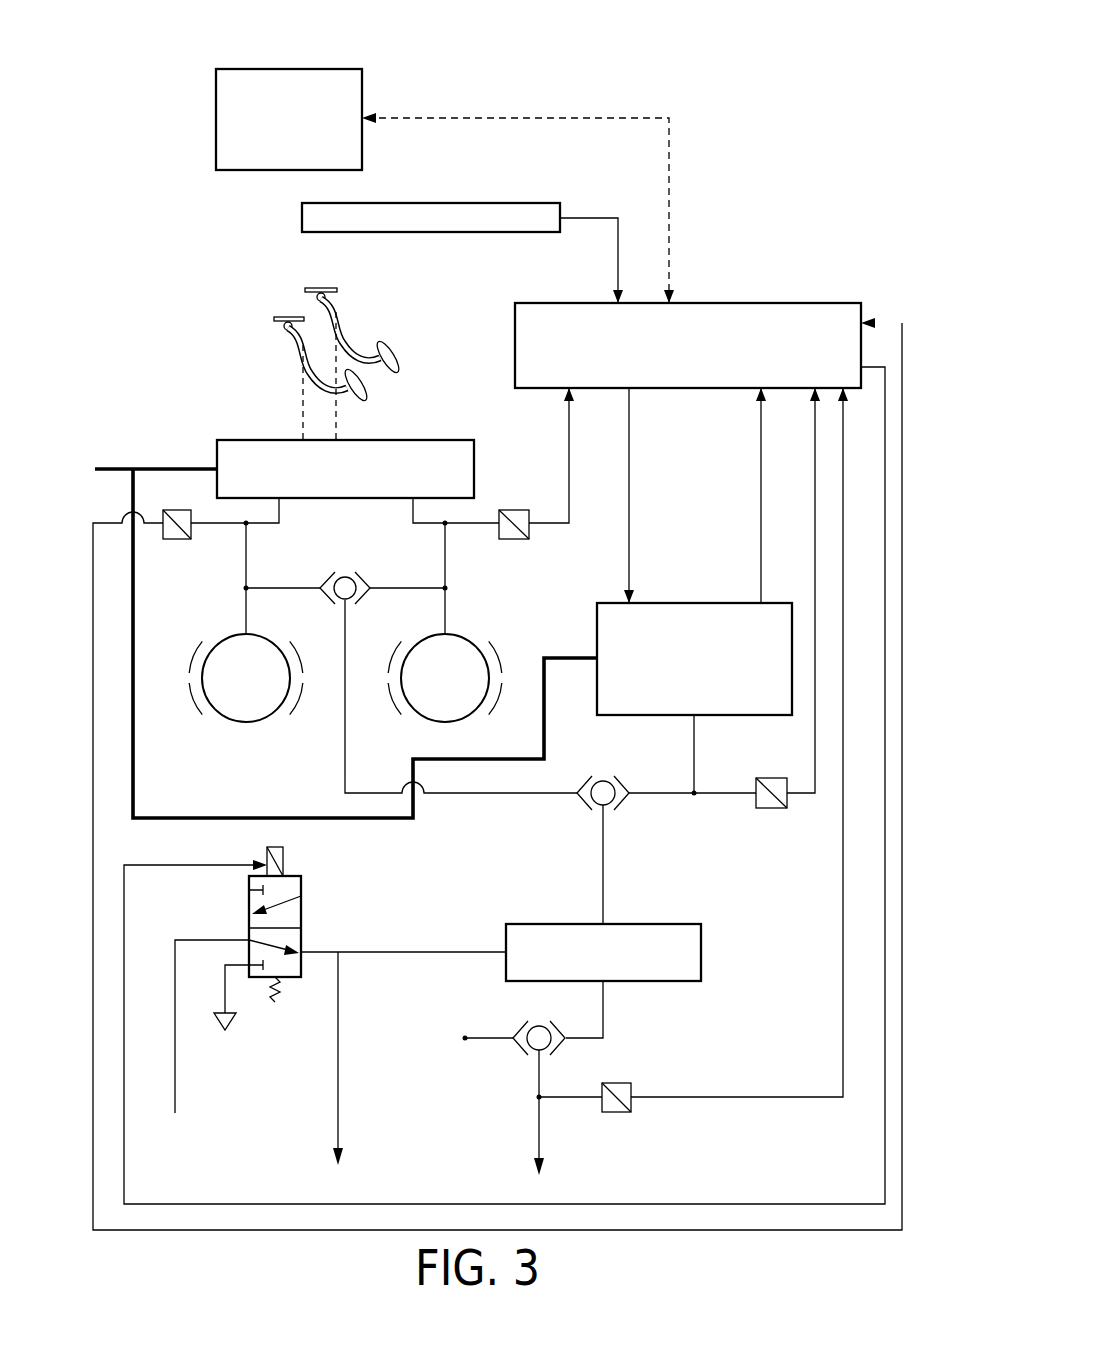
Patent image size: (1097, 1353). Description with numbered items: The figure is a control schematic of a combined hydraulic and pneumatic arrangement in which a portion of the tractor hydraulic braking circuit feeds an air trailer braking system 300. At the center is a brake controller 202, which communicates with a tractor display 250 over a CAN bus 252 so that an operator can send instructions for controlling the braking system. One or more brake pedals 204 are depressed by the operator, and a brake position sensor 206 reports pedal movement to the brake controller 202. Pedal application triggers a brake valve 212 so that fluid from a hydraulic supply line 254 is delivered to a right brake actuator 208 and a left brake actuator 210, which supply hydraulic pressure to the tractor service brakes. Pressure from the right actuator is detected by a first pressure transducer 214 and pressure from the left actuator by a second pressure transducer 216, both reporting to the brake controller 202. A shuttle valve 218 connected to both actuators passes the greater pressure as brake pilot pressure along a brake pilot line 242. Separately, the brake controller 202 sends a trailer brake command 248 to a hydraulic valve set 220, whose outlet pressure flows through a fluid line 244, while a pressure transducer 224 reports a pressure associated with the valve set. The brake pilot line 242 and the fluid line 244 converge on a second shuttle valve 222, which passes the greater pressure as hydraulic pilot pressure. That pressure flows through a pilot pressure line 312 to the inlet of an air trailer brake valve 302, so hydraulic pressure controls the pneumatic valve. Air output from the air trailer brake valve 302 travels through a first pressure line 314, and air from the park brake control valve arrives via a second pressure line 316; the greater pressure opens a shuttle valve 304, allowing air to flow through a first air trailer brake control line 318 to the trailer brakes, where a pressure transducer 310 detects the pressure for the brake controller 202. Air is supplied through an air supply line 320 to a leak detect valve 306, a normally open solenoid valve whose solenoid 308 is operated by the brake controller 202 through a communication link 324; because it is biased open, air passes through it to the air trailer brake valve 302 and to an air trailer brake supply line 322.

The tractor display 250 is at (236, 69).
The CAN bus 252 is at (417, 117).
The brake position sensor 206 is at (508, 203).
The brake controller 202 is at (750, 303).
The air trailer braking system 300 is at (798, 106).
The brake pedals 204 is at (300, 292).
The brake valve 212 is at (416, 440).
The hydraulic supply line 254 is at (113, 469).
The second pressure transducer 216 is at (513, 510).
The trailer brake command 248 is at (629, 478).
The shuttle valve 218 is at (344, 576).
The first pressure transducer 214 is at (177, 541).
The left brake actuator 210 is at (462, 642).
The hydraulic valve set 220 is at (694, 603).
The right brake actuator 208 is at (246, 722).
The second shuttle valve 222 is at (598, 780).
The brake pilot line 242 is at (468, 795).
The fluid line 244 is at (656, 795).
The pressure transducer 224 is at (771, 810).
The communication link 324 is at (196, 865).
The solenoid 308 is at (283, 864).
The leak detect valve 306 is at (328, 904).
The pilot pressure line 312 is at (603, 884).
The air trailer brake valve 302 is at (701, 953).
The shuttle valve 304 is at (532, 1028).
The first pressure line 314 is at (603, 1014).
The second pressure line 316 is at (478, 1044).
The first air trailer brake control line 318 is at (539, 1134).
The pressure transducer 310 is at (615, 1114).
The air supply line 320 is at (178, 1084).
The air trailer brake supply line 322 is at (338, 1118).